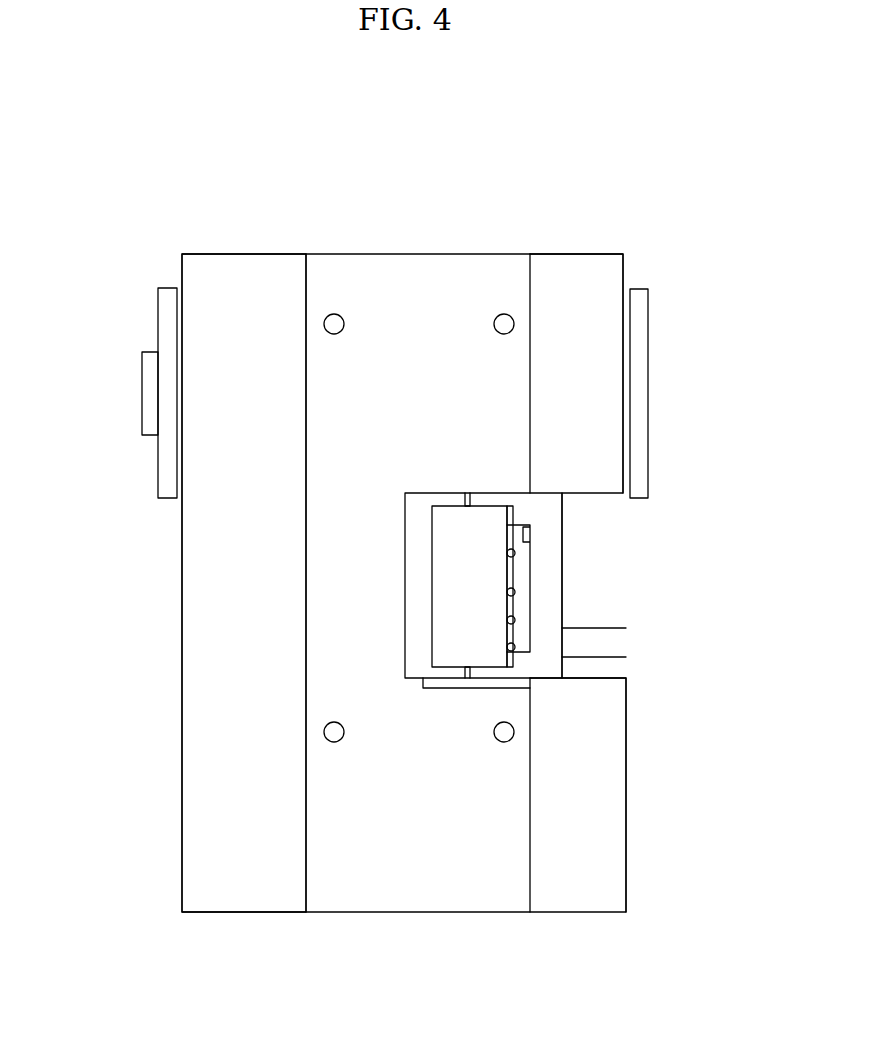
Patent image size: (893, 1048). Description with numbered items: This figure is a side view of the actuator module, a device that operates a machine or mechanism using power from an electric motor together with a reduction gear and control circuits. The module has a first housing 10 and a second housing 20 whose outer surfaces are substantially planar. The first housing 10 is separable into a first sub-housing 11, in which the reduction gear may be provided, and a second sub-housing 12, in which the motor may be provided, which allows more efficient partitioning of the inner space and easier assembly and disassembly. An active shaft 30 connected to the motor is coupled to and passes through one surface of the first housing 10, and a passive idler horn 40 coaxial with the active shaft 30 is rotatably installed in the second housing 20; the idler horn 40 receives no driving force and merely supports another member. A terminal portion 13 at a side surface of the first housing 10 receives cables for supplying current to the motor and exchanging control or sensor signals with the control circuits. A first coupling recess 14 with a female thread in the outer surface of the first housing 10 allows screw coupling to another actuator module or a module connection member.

The first housing 10 is at (267, 151).
The first sub-housing 11 is at (275, 267).
The second sub-housing 12 is at (352, 275).
The terminal portion 13 is at (413, 602).
The first coupling recess 14 is at (327, 727).
The second housing 20 is at (568, 273).
The active shaft 30 is at (167, 319).
The passive idler horn 40 is at (642, 358).